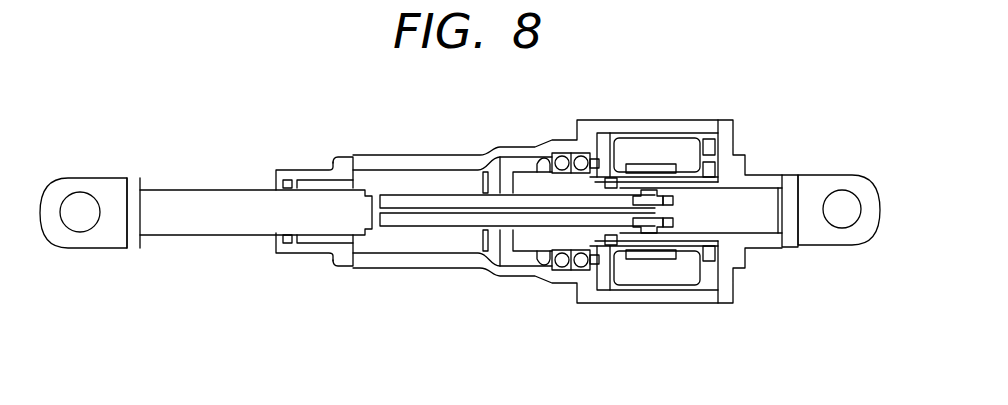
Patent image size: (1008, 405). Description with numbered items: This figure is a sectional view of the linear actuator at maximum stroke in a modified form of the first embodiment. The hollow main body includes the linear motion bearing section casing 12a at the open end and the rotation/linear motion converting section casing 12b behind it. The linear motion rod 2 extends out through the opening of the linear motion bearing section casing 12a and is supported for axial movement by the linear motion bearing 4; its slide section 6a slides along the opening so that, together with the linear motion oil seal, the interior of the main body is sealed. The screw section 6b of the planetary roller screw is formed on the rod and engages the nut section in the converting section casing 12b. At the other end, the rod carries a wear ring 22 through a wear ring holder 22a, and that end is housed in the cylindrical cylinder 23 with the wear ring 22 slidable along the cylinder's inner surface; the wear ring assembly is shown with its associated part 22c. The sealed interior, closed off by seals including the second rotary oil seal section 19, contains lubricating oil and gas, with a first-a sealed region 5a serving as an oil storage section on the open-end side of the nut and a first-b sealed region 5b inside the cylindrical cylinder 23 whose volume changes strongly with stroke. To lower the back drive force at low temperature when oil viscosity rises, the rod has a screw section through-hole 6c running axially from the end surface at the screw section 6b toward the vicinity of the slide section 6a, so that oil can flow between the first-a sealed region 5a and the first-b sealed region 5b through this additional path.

The linear motion rod 2 is at (199, 190).
The linear motion bearing 4 is at (309, 187).
The first-a sealed region 5a is at (428, 178).
The first-b sealed region 5b is at (758, 220).
The slide section 6a is at (232, 222).
The screw section 6b is at (440, 225).
The screw section through-hole 6c is at (395, 213).
The linear motion bearing section casing 12a is at (345, 166).
The rotation/linear motion converting section casing 12b is at (473, 262).
The second rotary oil seal section 19 is at (626, 245).
The wear ring 22 is at (648, 192).
The wear ring holder 22a is at (650, 233).
The spring end portion 22c is at (664, 192).
The cylindrical cylinder 23 is at (715, 255).